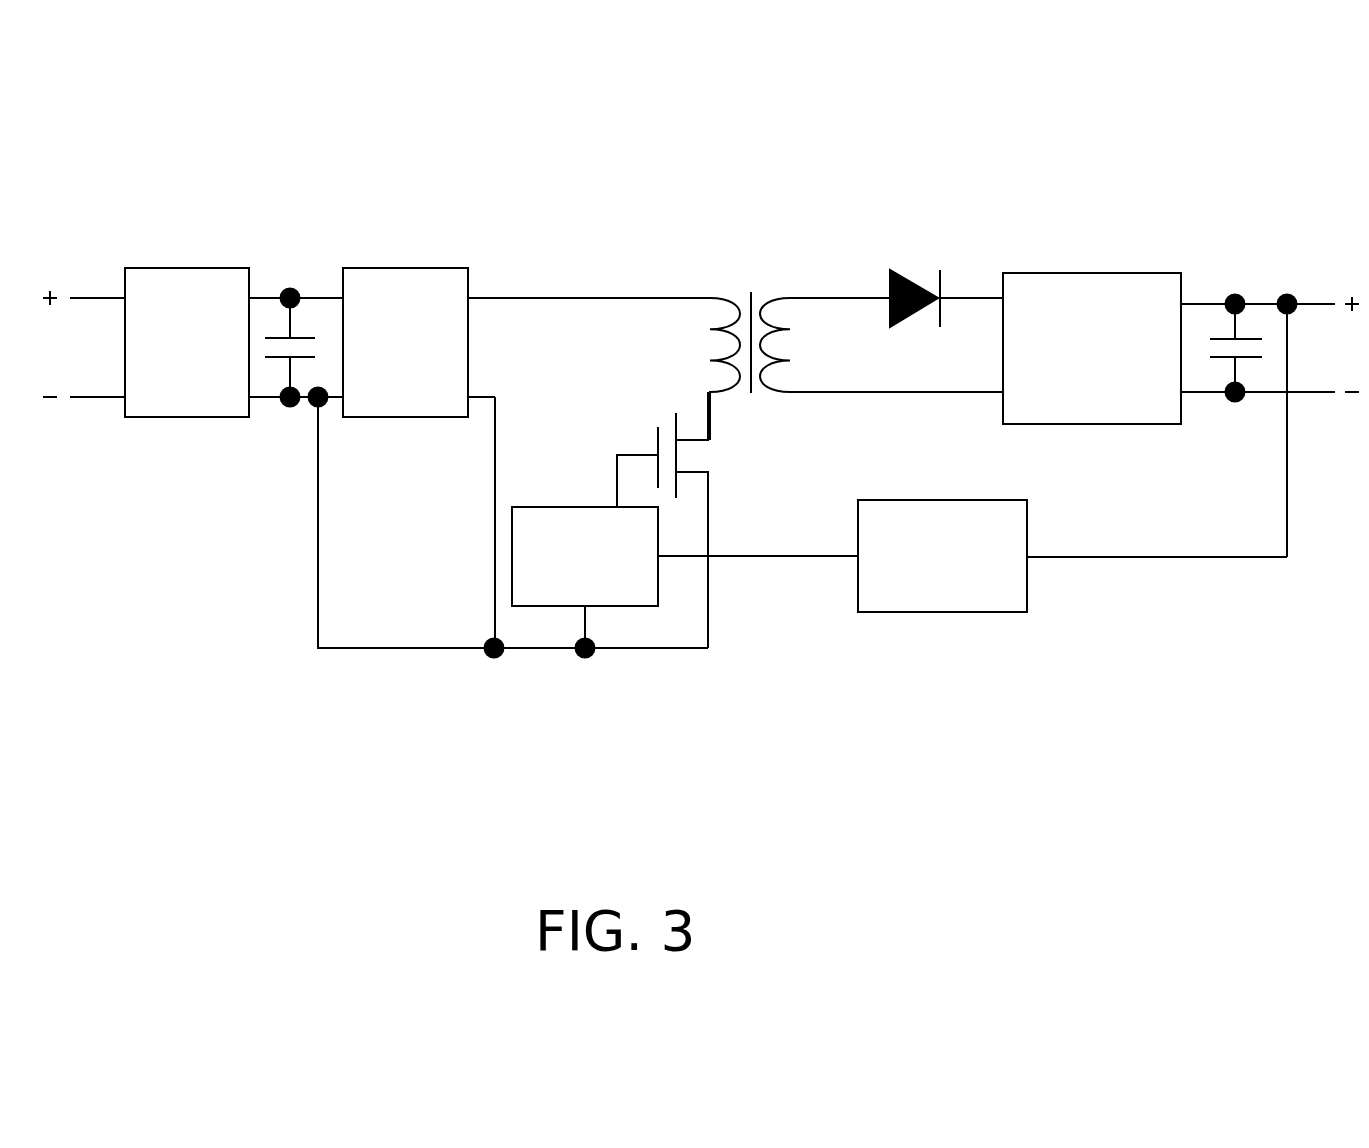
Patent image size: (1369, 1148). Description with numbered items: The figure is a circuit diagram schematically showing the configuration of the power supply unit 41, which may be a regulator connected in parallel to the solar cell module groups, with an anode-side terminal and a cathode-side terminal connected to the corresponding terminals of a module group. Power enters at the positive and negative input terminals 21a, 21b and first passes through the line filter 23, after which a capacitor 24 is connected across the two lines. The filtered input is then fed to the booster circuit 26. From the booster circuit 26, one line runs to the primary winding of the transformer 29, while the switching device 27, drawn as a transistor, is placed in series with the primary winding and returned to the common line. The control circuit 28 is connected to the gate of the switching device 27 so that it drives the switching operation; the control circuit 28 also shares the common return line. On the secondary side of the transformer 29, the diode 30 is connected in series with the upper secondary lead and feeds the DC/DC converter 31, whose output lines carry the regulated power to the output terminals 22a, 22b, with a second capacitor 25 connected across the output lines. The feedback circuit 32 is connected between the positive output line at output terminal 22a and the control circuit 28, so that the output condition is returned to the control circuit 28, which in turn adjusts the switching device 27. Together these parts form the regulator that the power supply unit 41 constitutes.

The input terminal 21a is at (97, 298).
The input terminal 21b is at (93, 397).
The output terminal 22a is at (1317, 304).
The output terminal 22b is at (1315, 397).
The line filter 23 is at (190, 268).
The capacitor 24 is at (307, 338).
The capacitor 25 is at (1248, 339).
The booster circuit 26 is at (424, 268).
The switching device 27 is at (678, 453).
The control circuit 28 is at (531, 507).
The transformer 29 is at (732, 298).
The diode 30 is at (898, 270).
The DC/DC converter 31 is at (1087, 273).
The feedback circuit 32 is at (943, 612).
The power supply unit 41 is at (1193, 145).